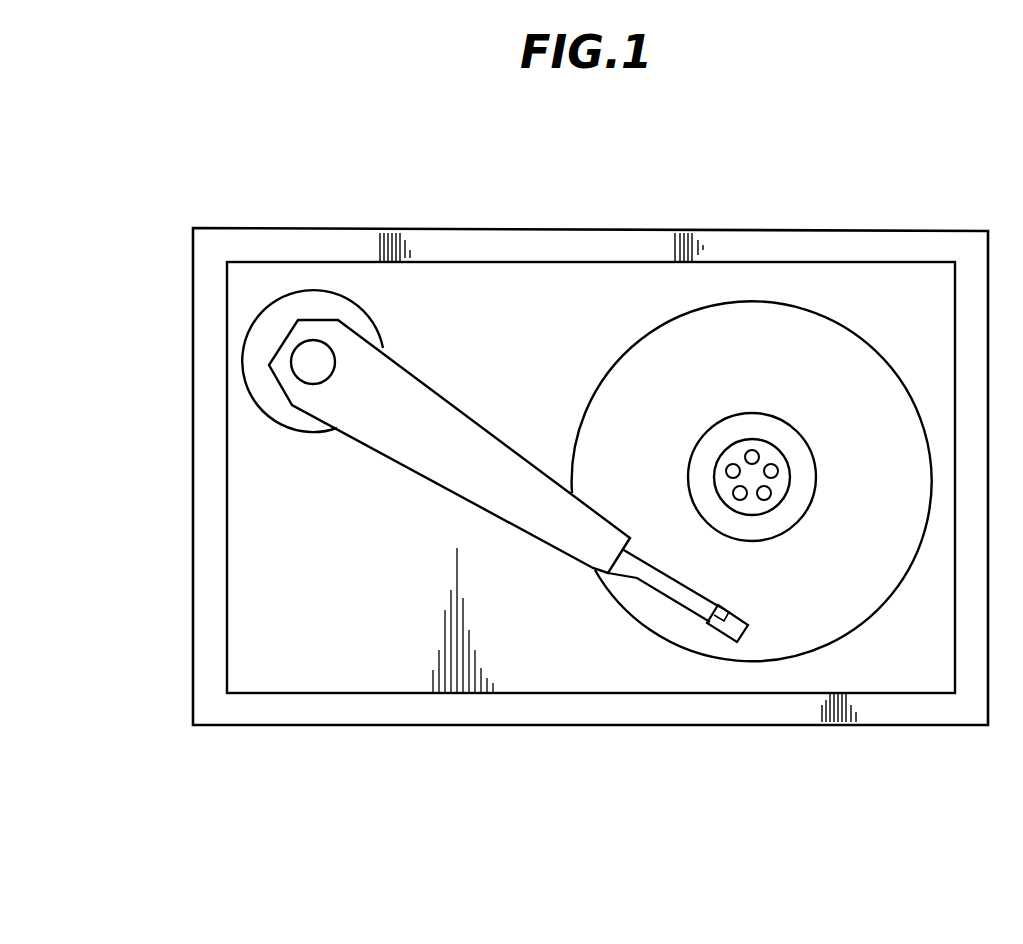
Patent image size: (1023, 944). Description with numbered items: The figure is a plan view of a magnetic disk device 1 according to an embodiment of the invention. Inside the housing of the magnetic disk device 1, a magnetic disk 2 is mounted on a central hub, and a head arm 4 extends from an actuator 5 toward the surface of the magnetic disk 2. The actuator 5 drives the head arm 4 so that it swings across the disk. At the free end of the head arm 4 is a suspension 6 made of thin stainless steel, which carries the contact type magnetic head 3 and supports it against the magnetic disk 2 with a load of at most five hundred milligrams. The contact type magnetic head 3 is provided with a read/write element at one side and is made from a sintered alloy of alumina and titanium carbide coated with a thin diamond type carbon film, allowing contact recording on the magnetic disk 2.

The magnetic disk device 1 is at (1012, 832).
The magnetic disk 2 is at (808, 313).
The contact recording magnetic head 3 is at (741, 636).
The head arm 4 is at (400, 458).
The actuator 5 is at (328, 298).
The suspension 6 is at (638, 578).